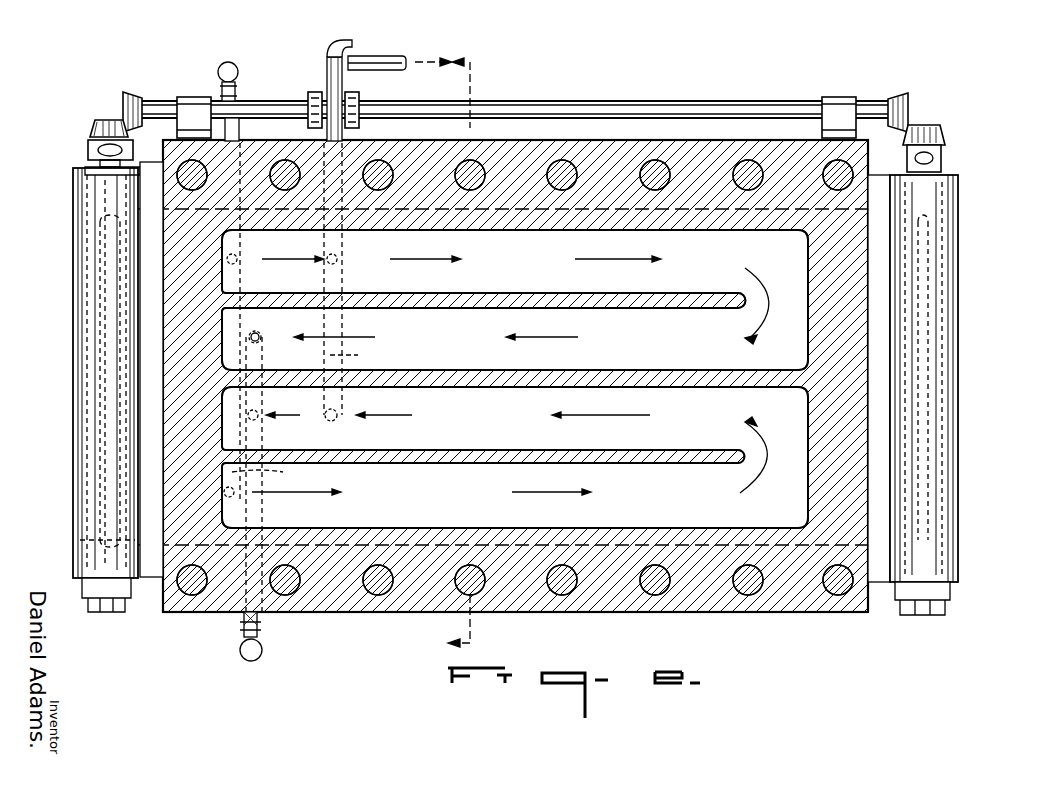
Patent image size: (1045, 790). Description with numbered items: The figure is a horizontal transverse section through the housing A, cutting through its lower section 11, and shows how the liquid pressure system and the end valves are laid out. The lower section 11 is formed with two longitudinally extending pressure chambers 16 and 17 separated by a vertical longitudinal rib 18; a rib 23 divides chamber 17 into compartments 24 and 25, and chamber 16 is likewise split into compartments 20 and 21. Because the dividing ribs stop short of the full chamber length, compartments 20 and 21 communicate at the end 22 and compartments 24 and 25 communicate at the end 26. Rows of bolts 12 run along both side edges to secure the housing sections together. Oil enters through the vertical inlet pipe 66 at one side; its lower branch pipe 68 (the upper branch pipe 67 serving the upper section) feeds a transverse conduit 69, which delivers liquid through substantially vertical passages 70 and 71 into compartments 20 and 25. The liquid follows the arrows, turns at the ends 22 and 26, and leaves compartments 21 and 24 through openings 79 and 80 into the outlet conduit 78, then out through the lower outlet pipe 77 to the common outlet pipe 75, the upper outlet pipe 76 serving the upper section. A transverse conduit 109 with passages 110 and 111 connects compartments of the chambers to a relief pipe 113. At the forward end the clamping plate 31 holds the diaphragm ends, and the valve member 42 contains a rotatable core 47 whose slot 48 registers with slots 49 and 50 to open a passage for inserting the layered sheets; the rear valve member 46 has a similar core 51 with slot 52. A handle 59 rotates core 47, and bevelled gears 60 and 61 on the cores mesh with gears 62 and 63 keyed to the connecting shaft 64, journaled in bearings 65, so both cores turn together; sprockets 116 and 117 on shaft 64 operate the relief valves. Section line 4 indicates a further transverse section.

The housing A is at (732, 135).
The section line 4- 4 is at (453, 354).
The lower section 11 is at (680, 592).
The bolts 12 is at (555, 172).
The pressure chamber 16 is at (775, 515).
The pressure chamber 17 is at (675, 240).
The rib 18 is at (695, 355).
The compartment 20 is at (451, 492).
The compartment 21 is at (458, 412).
The communicating end 22 is at (770, 455).
The rib 23 is at (458, 298).
The compartment 24 is at (584, 327).
The compartment 25 is at (461, 248).
The communicating end 26 is at (771, 306).
The clamping plate 31 is at (150, 568).
The valve member 42 is at (73, 388).
The valve member 46 is at (958, 333).
The core 47 is at (88, 434).
The slot 48 is at (110, 240).
The slot 49 is at (90, 538).
The slot 50 is at (128, 480).
The core 51 is at (940, 522).
The slot 52 is at (928, 445).
The handle 59 is at (88, 152).
The bevelled gear 60 is at (107, 118).
The bevelled gear 61 is at (935, 125).
The bevelled gear 62 is at (132, 90).
The bevelled gear 63 is at (902, 92).
The connecting shaft 64 is at (505, 118).
The bearings 65 is at (192, 97).
The inlet pipe 66 is at (234, 70).
The upper branch pipe 67 is at (238, 92).
The lower branch pipe 68 is at (240, 132).
The conduit 69 is at (236, 315).
The passage 70 is at (234, 495).
The passage 71 is at (236, 262).
The outlet pipe 75 is at (250, 660).
The upper outlet pipe 76 is at (258, 628).
The lower outlet pipe 77 is at (240, 622).
The conduit 78 is at (269, 473).
The opening 79 is at (259, 340).
The opening 80 is at (258, 418).
The transverse conduit 109 is at (358, 355).
The passage 110 is at (335, 420).
The passage 111 is at (338, 257).
The relief pipe 113 is at (385, 55).
The sprocket 116 is at (312, 92).
The sprocket 117 is at (359, 92).